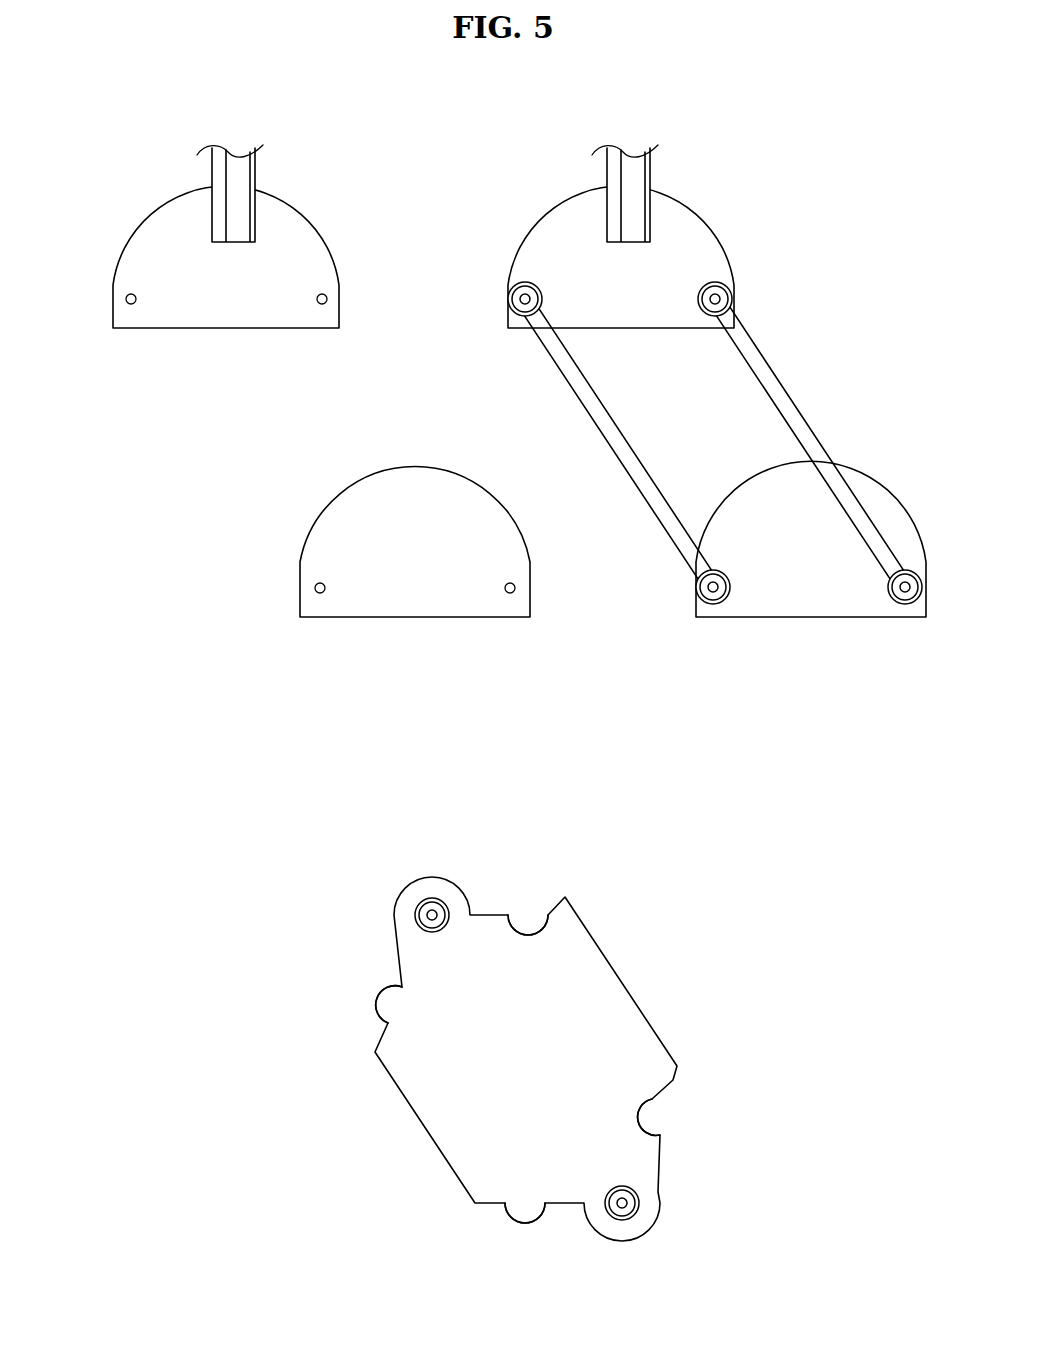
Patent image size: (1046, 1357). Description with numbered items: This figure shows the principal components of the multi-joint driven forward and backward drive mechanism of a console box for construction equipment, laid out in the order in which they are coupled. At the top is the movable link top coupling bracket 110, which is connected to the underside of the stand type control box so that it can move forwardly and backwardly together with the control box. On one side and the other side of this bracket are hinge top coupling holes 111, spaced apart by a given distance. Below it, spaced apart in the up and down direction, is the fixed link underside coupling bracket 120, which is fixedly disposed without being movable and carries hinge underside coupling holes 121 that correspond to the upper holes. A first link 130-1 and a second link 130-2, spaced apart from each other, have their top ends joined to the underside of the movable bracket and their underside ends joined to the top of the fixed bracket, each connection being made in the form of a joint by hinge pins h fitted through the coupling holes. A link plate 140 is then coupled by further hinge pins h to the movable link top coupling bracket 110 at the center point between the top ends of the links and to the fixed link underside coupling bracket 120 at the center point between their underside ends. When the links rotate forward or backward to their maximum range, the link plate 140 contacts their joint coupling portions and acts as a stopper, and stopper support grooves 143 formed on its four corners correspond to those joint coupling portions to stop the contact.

The movable link top coupling bracket 110 is at (157, 223).
The hinge top coupling holes 111 is at (127, 296).
The fixed link underside coupling bracket 120 is at (373, 597).
The hinge underside coupling holes 121 is at (315, 586).
The first link 130-1 is at (608, 427).
The second link 130-2 is at (790, 410).
The link plate 140 is at (603, 1013).
The stopper support grooves 143 is at (528, 920).
The hinge pins h is at (506, 284).